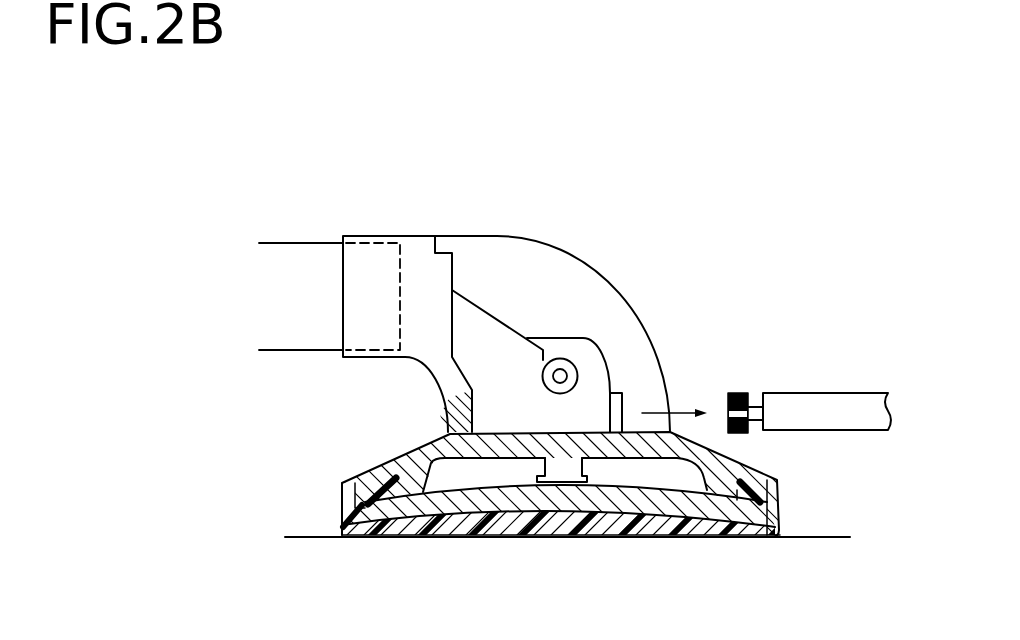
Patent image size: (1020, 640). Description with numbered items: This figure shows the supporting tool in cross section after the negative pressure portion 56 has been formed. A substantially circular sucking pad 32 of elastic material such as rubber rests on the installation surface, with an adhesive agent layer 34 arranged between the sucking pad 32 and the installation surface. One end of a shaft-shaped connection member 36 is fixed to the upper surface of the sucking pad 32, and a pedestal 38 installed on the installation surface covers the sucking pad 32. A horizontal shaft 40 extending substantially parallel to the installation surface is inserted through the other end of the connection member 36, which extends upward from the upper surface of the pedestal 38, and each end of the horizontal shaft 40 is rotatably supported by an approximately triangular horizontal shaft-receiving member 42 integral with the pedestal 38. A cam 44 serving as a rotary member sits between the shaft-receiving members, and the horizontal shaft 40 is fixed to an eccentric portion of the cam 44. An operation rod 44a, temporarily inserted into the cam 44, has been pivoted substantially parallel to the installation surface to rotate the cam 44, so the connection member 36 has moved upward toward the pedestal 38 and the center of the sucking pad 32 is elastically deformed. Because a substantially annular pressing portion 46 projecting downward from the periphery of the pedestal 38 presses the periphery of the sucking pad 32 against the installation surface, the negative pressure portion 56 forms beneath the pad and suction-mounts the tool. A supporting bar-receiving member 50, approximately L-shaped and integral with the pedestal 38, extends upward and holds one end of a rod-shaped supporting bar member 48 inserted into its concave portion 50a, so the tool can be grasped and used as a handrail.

The sucking pad 32 is at (730, 513).
The adhesive agent layer 34 is at (433, 538).
The connection member 36 is at (570, 465).
The pedestal 38 is at (383, 463).
The horizontal shaft 40 is at (572, 362).
The horizontal shaft-receiving member 42 is at (470, 330).
The cam 44 is at (580, 338).
The operation rod 44a is at (823, 400).
The pressing portion 46 is at (342, 507).
The supporting bar member 48 is at (283, 262).
The supporting bar-receiving member 50 is at (365, 237).
The concave portion 50a is at (352, 286).
The negative pressure portion 56 is at (555, 525).